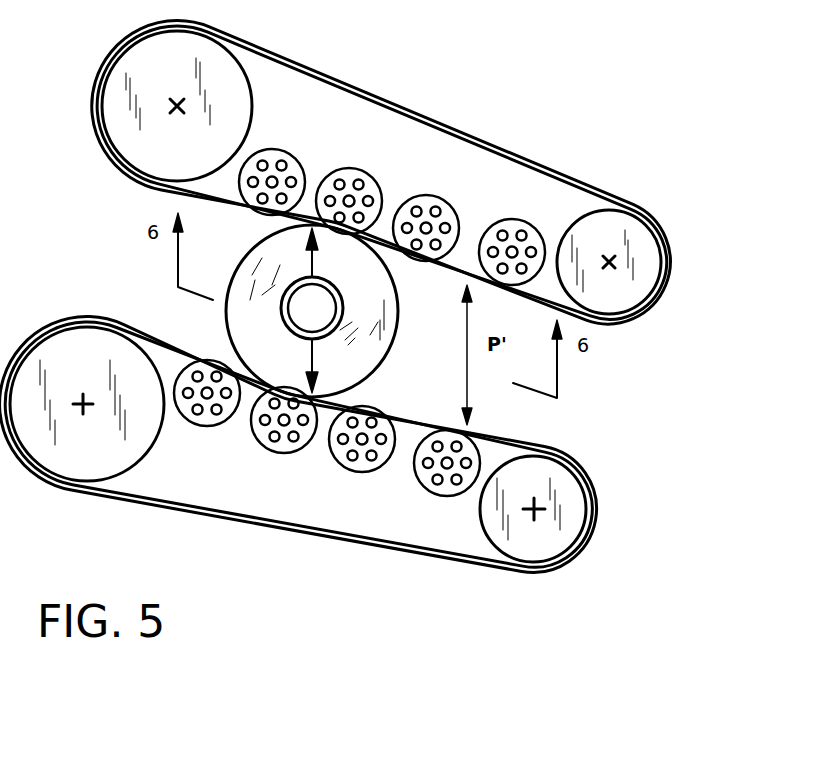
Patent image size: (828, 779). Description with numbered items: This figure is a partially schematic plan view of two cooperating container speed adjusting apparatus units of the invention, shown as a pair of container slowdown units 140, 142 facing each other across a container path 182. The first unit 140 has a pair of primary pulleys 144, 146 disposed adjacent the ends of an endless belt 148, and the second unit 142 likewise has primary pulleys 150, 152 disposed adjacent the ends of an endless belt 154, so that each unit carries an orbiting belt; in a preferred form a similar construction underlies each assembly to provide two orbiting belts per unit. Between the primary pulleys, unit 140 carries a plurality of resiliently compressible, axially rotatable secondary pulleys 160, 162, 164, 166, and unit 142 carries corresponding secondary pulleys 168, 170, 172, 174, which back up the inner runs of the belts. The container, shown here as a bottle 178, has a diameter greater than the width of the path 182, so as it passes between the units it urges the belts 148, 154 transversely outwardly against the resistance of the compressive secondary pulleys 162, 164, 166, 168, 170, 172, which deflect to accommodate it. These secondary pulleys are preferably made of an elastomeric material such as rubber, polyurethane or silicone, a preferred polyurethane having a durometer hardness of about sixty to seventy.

The container slowdown unit 140 is at (415, 170).
The container slowdown unit 142 is at (298, 459).
The primary pulley 144 is at (207, 58).
The primary pulley 146 is at (637, 232).
The endless belt 148 is at (358, 90).
The primary pulley 150 is at (107, 355).
The primary pulley 152 is at (523, 538).
The endless belt 154 is at (340, 540).
The secondary pulley 160 is at (284, 160).
The secondary pulley 162 is at (363, 181).
The secondary pulley 164 is at (428, 197).
The secondary pulley 166 is at (502, 221).
The secondary pulley 168 is at (211, 421).
The secondary pulley 170 is at (283, 444).
The secondary pulley 172 is at (359, 460).
The secondary pulley 174 is at (447, 488).
The bottle 178 is at (364, 364).
The path 182 is at (603, 442).